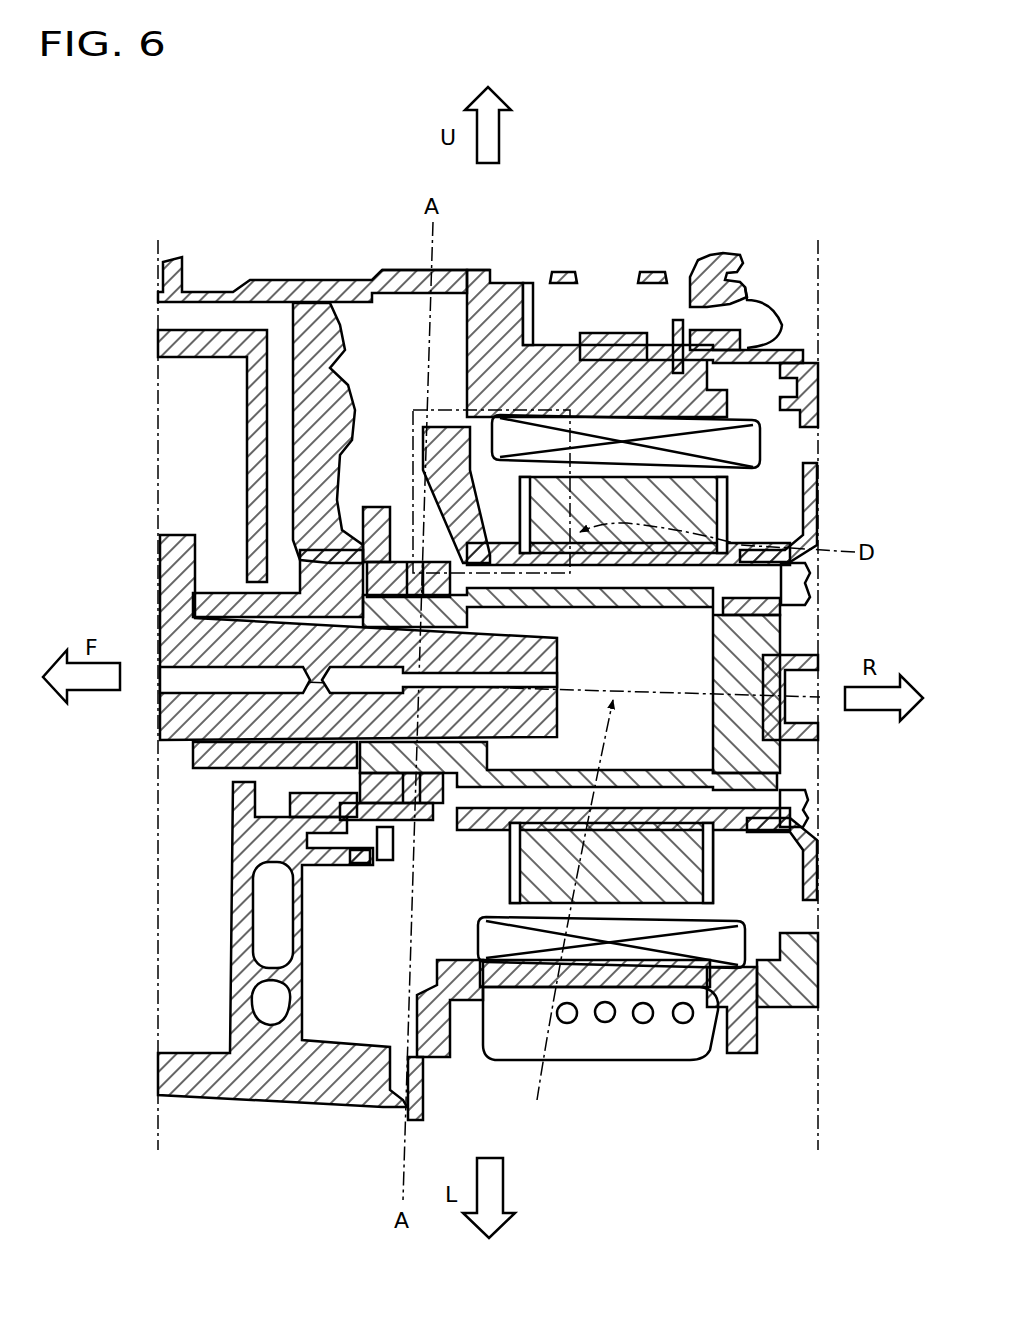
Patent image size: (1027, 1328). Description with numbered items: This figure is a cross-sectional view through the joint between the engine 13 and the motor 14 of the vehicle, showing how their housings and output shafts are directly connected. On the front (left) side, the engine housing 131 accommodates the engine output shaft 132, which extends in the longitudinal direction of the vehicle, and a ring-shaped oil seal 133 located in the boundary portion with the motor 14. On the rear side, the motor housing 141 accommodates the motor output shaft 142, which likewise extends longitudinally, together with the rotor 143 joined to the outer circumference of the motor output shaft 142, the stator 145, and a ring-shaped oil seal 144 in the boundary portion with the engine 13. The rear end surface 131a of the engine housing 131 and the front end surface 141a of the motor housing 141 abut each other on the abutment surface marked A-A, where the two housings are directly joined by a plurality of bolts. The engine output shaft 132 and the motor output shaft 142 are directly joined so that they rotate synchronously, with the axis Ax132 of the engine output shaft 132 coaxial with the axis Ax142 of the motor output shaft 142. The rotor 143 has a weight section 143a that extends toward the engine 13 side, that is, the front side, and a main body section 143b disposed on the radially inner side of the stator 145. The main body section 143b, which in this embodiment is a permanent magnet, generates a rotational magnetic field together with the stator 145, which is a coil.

The engine 13 is at (268, 1080).
The motor 14 is at (741, 1047).
The engine housing 131 is at (262, 290).
The rear end surface 131a is at (426, 268).
The engine output shaft 132 is at (180, 724).
The oil seal 133 is at (307, 378).
The motor housing 141 is at (495, 285).
The front end surface 141a is at (441, 268).
The motor output shaft 142 is at (715, 603).
The rotor 143 is at (745, 582).
The weight section 143a is at (456, 446).
The main body section 143b is at (688, 503).
The oil seal 144 is at (410, 552).
The stator 145 is at (748, 448).
The axis of the engine output shaft Ax132 is at (176, 667).
The axis of the motor output shaft Ax142 is at (556, 914).